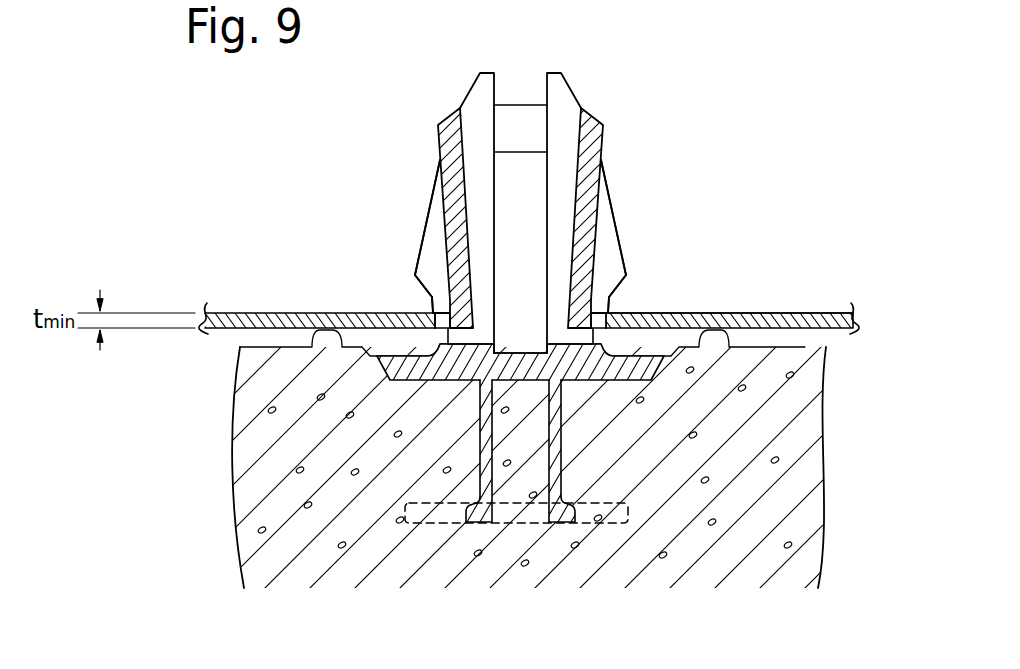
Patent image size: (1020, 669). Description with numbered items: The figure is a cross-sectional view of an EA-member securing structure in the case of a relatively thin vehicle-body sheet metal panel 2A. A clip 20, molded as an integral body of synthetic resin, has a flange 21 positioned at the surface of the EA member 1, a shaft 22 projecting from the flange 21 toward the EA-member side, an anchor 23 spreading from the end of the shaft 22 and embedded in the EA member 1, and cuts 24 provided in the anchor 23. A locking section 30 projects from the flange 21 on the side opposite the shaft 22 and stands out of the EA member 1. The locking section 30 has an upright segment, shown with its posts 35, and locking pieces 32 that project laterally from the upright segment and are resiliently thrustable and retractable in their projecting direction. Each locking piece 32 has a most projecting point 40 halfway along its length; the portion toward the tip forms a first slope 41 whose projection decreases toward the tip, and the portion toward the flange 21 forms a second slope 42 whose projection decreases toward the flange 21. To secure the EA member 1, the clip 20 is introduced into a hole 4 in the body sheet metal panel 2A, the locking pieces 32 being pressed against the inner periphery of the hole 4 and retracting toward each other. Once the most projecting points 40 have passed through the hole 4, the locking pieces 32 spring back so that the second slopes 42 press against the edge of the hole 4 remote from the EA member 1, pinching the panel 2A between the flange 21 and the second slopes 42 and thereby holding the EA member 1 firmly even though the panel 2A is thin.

The EA member 1 is at (813, 467).
The body sheet metal panel 2A is at (811, 312).
The hole 4 is at (640, 313).
The clip 20 is at (661, 130).
The flange 21 is at (623, 381).
The shaft 22 is at (562, 445).
The anchor 23 is at (608, 523).
The cuts 24 is at (563, 590).
The locking section 30 is at (614, 87).
The locking pieces 32 is at (621, 232).
The post 35 is at (560, 72).
The most projecting point 40 is at (623, 275).
The first slope 41 is at (615, 212).
The second slope 42 is at (613, 297).